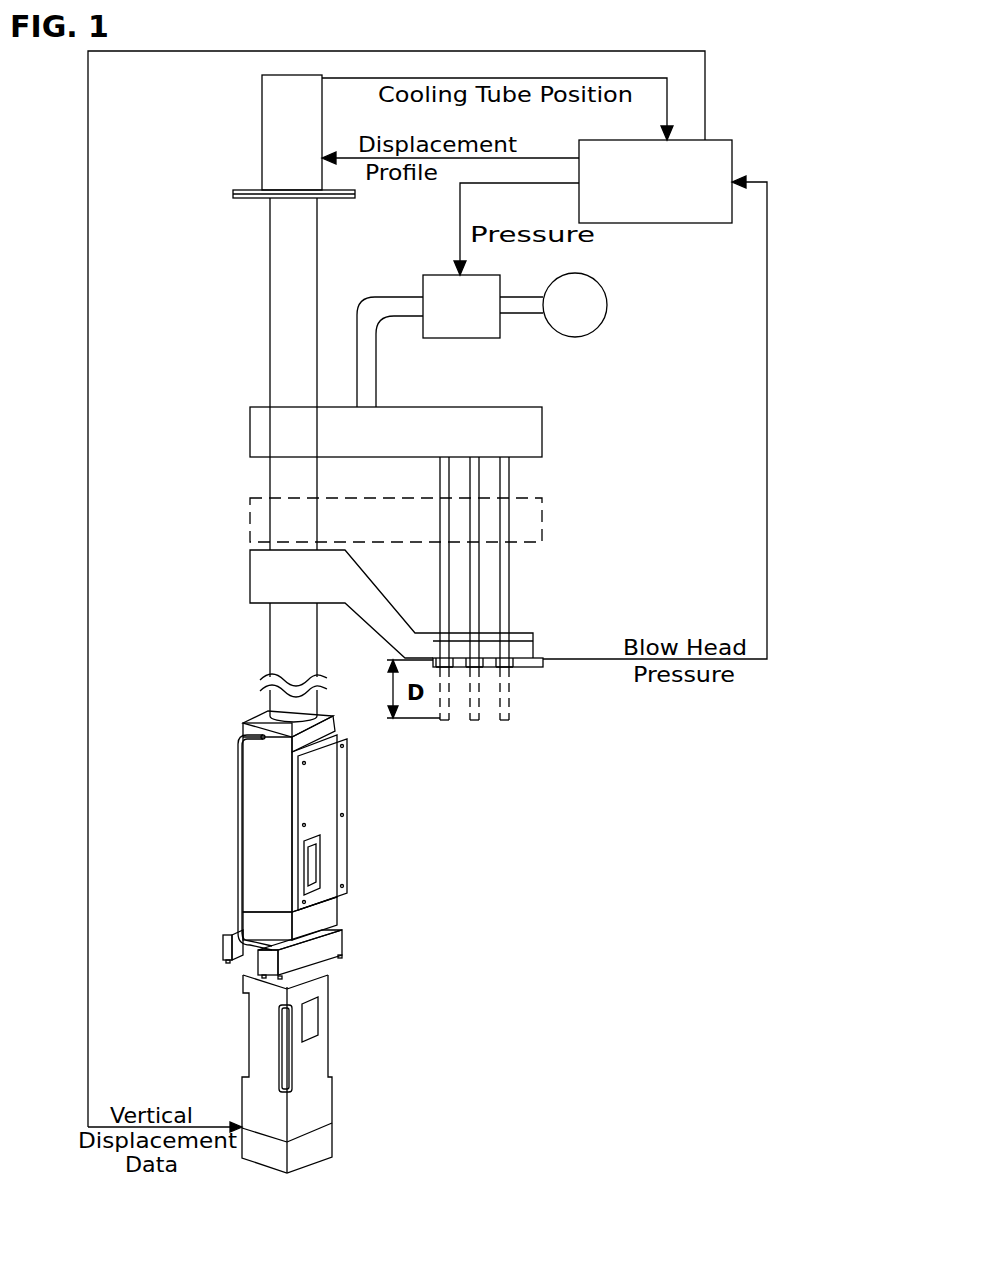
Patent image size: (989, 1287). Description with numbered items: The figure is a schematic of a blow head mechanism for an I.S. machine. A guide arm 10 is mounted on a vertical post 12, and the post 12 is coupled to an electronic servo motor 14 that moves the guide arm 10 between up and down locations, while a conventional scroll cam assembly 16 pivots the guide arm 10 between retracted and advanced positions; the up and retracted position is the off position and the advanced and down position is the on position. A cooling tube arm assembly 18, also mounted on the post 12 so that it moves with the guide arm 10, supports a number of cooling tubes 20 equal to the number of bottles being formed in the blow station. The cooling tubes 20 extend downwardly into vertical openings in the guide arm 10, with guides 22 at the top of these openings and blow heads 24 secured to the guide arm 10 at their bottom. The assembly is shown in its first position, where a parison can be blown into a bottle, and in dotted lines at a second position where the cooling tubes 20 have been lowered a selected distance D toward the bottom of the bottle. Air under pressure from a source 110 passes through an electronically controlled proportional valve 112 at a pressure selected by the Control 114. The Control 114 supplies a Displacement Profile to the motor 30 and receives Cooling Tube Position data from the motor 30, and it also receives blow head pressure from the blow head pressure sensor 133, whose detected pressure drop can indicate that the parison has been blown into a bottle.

The guide arm 10 is at (258, 587).
The vertical post 12 is at (280, 658).
The electronic (servo) motor 14 is at (308, 982).
The scroll cam assembly 16 is at (327, 798).
The cooling tube arm assembly 18 is at (415, 425).
The cooling tubes 20 is at (509, 475).
The guides 22 is at (513, 633).
The blow heads 24 is at (513, 665).
The motor 30 is at (308, 148).
The source of high pressure air 110 is at (605, 287).
The electronically controlled proportional valve 112 is at (490, 338).
The Control 114 is at (670, 223).
The blow head pressure sensor 133 is at (537, 658).